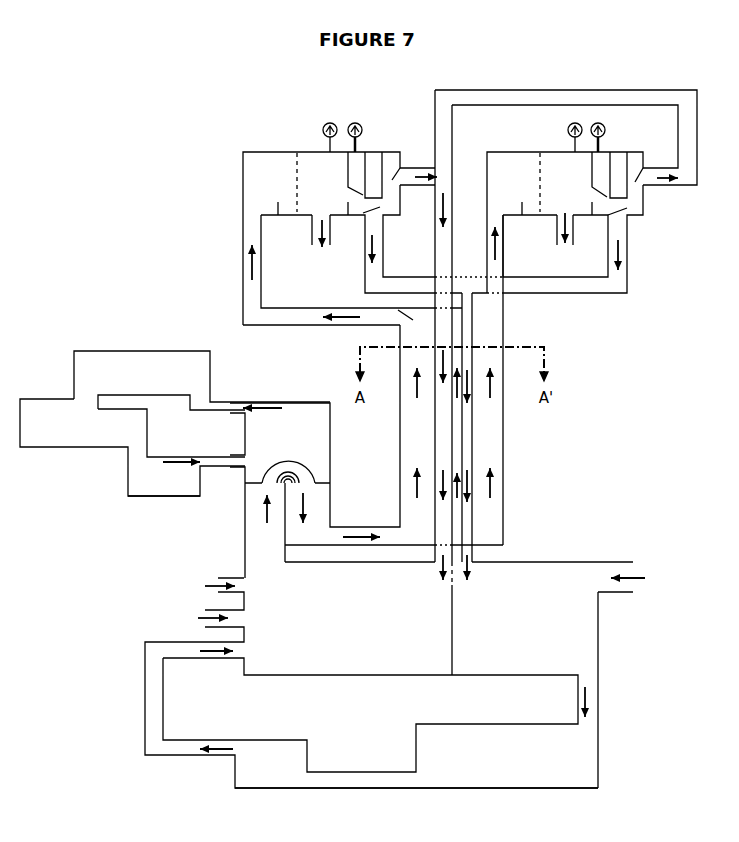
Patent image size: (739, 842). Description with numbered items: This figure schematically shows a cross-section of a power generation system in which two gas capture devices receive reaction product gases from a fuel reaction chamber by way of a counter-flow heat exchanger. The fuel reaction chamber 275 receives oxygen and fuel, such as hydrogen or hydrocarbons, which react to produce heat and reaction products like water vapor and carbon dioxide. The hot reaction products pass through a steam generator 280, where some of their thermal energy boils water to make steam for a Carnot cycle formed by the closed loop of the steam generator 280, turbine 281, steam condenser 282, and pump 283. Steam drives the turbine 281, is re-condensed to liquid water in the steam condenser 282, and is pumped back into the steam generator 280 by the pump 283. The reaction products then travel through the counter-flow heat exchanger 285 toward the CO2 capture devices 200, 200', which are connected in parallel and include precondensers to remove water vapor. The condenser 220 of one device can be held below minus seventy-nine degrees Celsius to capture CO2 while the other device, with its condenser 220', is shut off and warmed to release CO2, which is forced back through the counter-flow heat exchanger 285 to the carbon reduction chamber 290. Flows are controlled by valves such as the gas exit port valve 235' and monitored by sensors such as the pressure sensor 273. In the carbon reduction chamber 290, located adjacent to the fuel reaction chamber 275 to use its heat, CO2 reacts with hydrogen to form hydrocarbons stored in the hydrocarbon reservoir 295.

The CO2 capture device 200 is at (322, 211).
The pressure sensor 273 is at (348, 120).
The condenser 220 is at (380, 152).
The CO2 capture device 200' is at (566, 191).
The condenser 220' is at (627, 155).
The gas exit port valve 235' is at (667, 196).
The turbine 281 is at (152, 349).
The steam generator 280 is at (302, 400).
The steam condenser 282 is at (52, 449).
The pump 283 is at (158, 498).
The counter-flow heat exchanger 285 is at (508, 452).
The fuel reaction chamber 275 is at (356, 677).
The carbon reduction chamber 290 is at (600, 628).
The hydrocarbon reservoir 295 is at (600, 759).